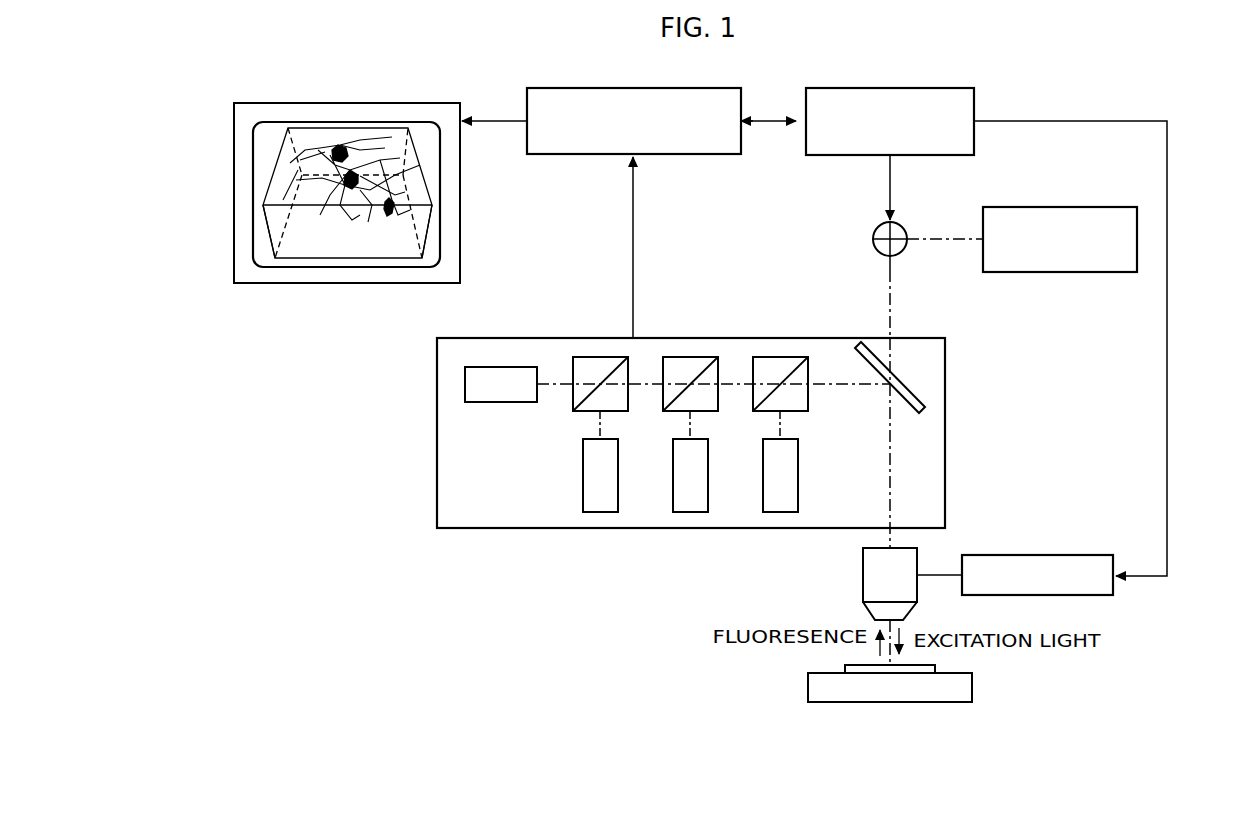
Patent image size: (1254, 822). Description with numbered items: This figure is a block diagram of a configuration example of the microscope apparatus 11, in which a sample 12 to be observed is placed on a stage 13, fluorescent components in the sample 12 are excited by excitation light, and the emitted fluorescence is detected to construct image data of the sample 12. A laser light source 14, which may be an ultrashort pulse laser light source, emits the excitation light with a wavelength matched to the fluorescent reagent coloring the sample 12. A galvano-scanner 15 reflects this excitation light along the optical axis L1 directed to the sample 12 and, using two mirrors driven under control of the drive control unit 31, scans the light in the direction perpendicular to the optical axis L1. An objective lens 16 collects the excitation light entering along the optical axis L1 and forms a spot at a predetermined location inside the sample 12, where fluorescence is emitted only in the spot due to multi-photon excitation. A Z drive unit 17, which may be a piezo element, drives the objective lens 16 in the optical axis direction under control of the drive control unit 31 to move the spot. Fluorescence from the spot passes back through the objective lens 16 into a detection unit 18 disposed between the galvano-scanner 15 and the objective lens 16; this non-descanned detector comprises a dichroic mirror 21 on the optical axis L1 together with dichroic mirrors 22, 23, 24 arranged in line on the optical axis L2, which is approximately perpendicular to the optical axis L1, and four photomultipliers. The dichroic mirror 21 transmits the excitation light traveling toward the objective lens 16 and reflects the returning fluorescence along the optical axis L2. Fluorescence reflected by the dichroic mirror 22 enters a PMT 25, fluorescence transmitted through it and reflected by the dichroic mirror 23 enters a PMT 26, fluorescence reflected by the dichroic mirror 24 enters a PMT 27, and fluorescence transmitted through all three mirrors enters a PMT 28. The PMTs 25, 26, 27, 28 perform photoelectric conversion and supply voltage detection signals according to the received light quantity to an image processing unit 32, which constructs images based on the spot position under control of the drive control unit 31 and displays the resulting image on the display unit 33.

The microscope apparatus 11 is at (422, 618).
The sample 12 is at (840, 668).
The stage 13 is at (972, 688).
The laser light source 14 is at (1061, 207).
The galvano-scanner 15 is at (902, 251).
The objective lens 16 is at (862, 575).
The Z drive unit 17 is at (1037, 555).
The detection unit 18 is at (945, 440).
The dichroic mirror 21 is at (895, 372).
The dichroic mirror 22 is at (796, 413).
The dichroic mirror 23 is at (706, 413).
The dichroic mirror 24 is at (616, 413).
The PMT 25 is at (798, 478).
The PMT 26 is at (708, 478).
The PMT 27 is at (618, 478).
The PMT 28 is at (500, 402).
The drive control unit 31 is at (888, 88).
The image processing unit 32 is at (634, 88).
The display unit 33 is at (350, 103).
The optical axis L1 is at (890, 303).
The optical axis L2 is at (851, 384).